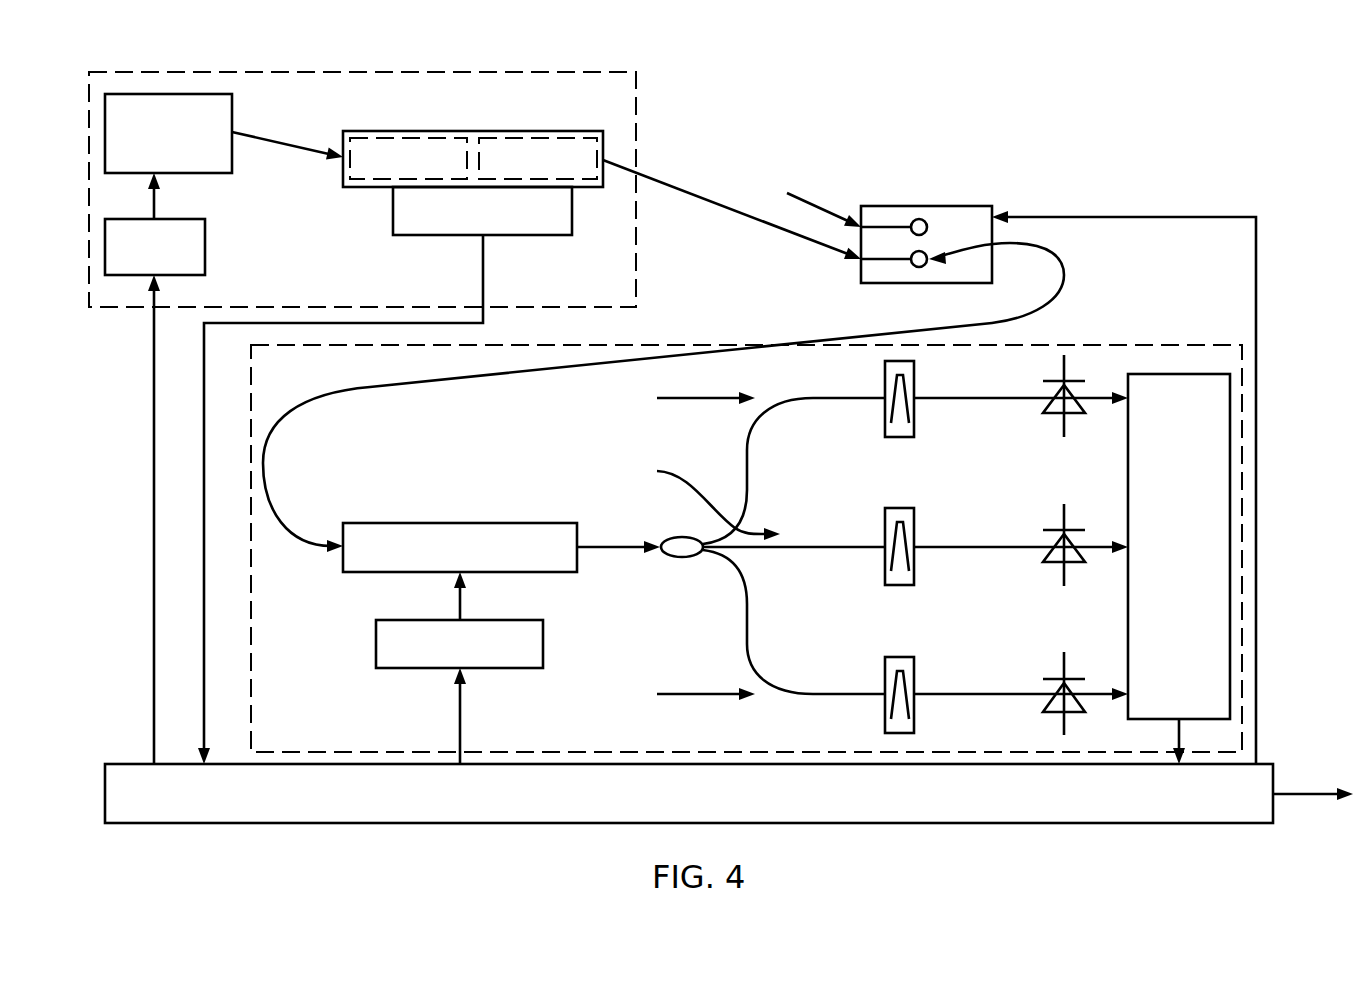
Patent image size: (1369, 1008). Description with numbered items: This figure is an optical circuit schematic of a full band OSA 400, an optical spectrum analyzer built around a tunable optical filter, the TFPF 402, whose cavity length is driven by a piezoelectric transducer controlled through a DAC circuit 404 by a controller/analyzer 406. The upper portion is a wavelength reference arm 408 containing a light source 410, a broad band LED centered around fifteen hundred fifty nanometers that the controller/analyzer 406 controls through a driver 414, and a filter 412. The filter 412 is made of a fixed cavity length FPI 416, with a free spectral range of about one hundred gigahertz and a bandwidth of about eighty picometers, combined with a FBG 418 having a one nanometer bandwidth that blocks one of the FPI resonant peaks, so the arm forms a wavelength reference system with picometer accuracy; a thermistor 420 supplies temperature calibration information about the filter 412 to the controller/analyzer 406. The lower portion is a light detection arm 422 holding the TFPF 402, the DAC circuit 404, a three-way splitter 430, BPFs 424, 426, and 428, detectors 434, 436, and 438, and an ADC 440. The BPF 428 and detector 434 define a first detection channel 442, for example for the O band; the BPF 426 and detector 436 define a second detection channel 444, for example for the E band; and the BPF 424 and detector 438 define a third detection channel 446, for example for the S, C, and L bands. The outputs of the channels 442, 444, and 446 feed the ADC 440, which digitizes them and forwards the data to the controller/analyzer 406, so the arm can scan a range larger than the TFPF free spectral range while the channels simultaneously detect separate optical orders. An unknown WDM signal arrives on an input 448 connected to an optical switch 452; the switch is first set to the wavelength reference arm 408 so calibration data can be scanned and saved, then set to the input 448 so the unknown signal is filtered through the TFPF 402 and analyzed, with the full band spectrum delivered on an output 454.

The full band OSA 400 is at (68, 80).
The TFPF 402 is at (481, 559).
The DAC circuit 404 is at (481, 655).
The controller/analyzer 406 is at (691, 805).
The wavelength reference arm 408 is at (640, 112).
The light source 410 is at (189, 145).
The filter 412 is at (470, 131).
The driver 414 is at (176, 258).
The fixed cavity length FPI 416 is at (429, 170).
The FBG 418 is at (559, 170).
The thermistor 420 is at (504, 222).
The light detection arm 422 is at (251, 492).
The BPF 424 is at (917, 675).
The BPF 426 is at (917, 526).
The BPF 428 is at (917, 390).
The three-way splitter 430 is at (676, 557).
The detector 434 is at (1058, 416).
The detector 436 is at (1058, 566).
The detector 438 is at (1053, 714).
The ADC 440 is at (1200, 543).
The first detection channel 442 is at (684, 399).
The second detection channel 444 is at (696, 500).
The third detection channel 446 is at (684, 694).
The input 448 is at (820, 207).
The optical switch 452 is at (892, 284).
The output 454 is at (1290, 793).